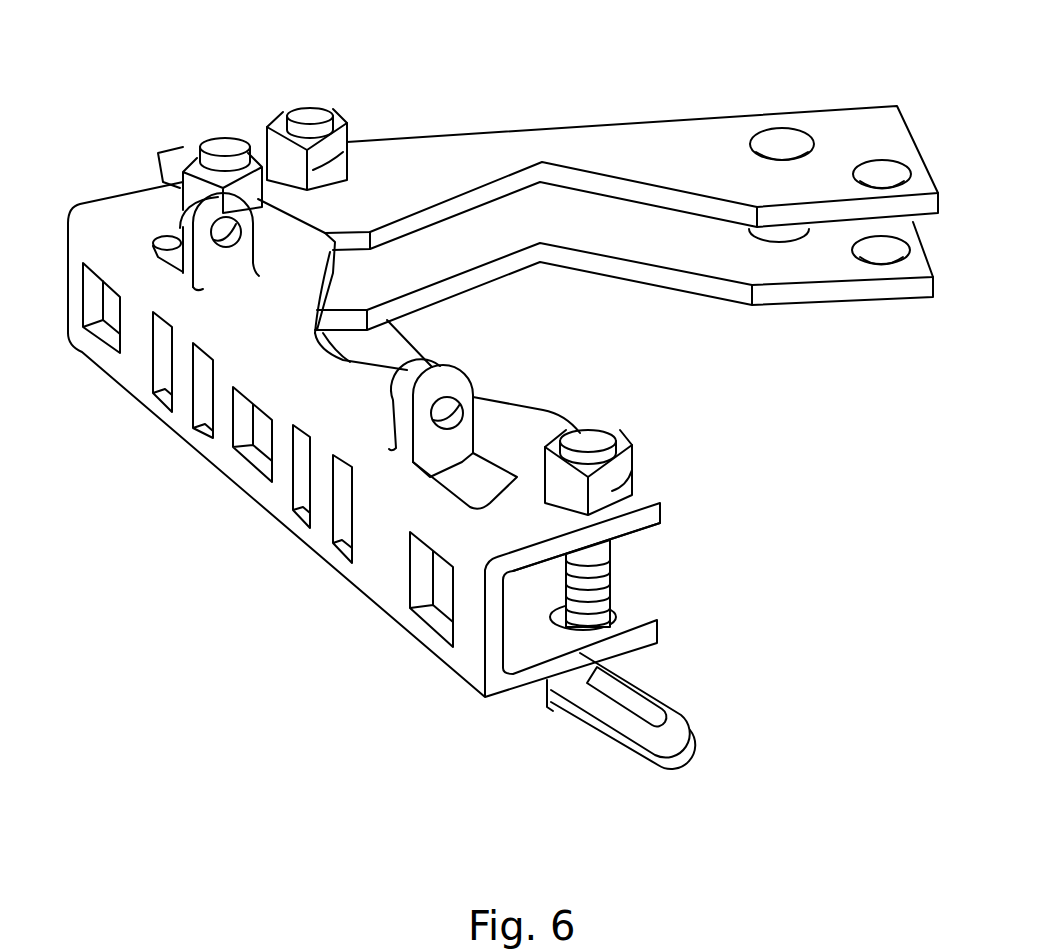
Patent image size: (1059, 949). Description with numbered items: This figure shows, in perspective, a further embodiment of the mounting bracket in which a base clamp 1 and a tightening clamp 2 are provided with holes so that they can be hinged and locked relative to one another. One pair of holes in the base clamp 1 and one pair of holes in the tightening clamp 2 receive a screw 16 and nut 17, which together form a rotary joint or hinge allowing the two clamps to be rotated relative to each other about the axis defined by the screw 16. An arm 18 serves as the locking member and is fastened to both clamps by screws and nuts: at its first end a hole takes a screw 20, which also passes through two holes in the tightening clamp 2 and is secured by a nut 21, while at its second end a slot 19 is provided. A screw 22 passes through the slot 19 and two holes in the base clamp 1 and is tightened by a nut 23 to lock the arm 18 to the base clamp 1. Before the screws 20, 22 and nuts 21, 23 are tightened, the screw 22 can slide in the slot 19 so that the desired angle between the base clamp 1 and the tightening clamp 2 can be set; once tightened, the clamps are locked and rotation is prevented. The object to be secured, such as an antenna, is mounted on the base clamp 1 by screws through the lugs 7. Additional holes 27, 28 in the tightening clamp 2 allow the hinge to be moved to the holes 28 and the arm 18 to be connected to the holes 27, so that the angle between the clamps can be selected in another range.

The base clamp 1 is at (520, 423).
The tightening clamp 2 is at (570, 143).
The lug 7 is at (155, 243).
The screw 16 is at (203, 147).
The nut 17 is at (180, 188).
The arm 18 is at (677, 700).
The slot 19 is at (642, 712).
The screw 20 is at (290, 125).
The nut 21 is at (347, 142).
The screw 22 is at (590, 443).
The nut 23 is at (610, 492).
The additional hole 27 is at (780, 147).
The additional hole 28 is at (877, 180).